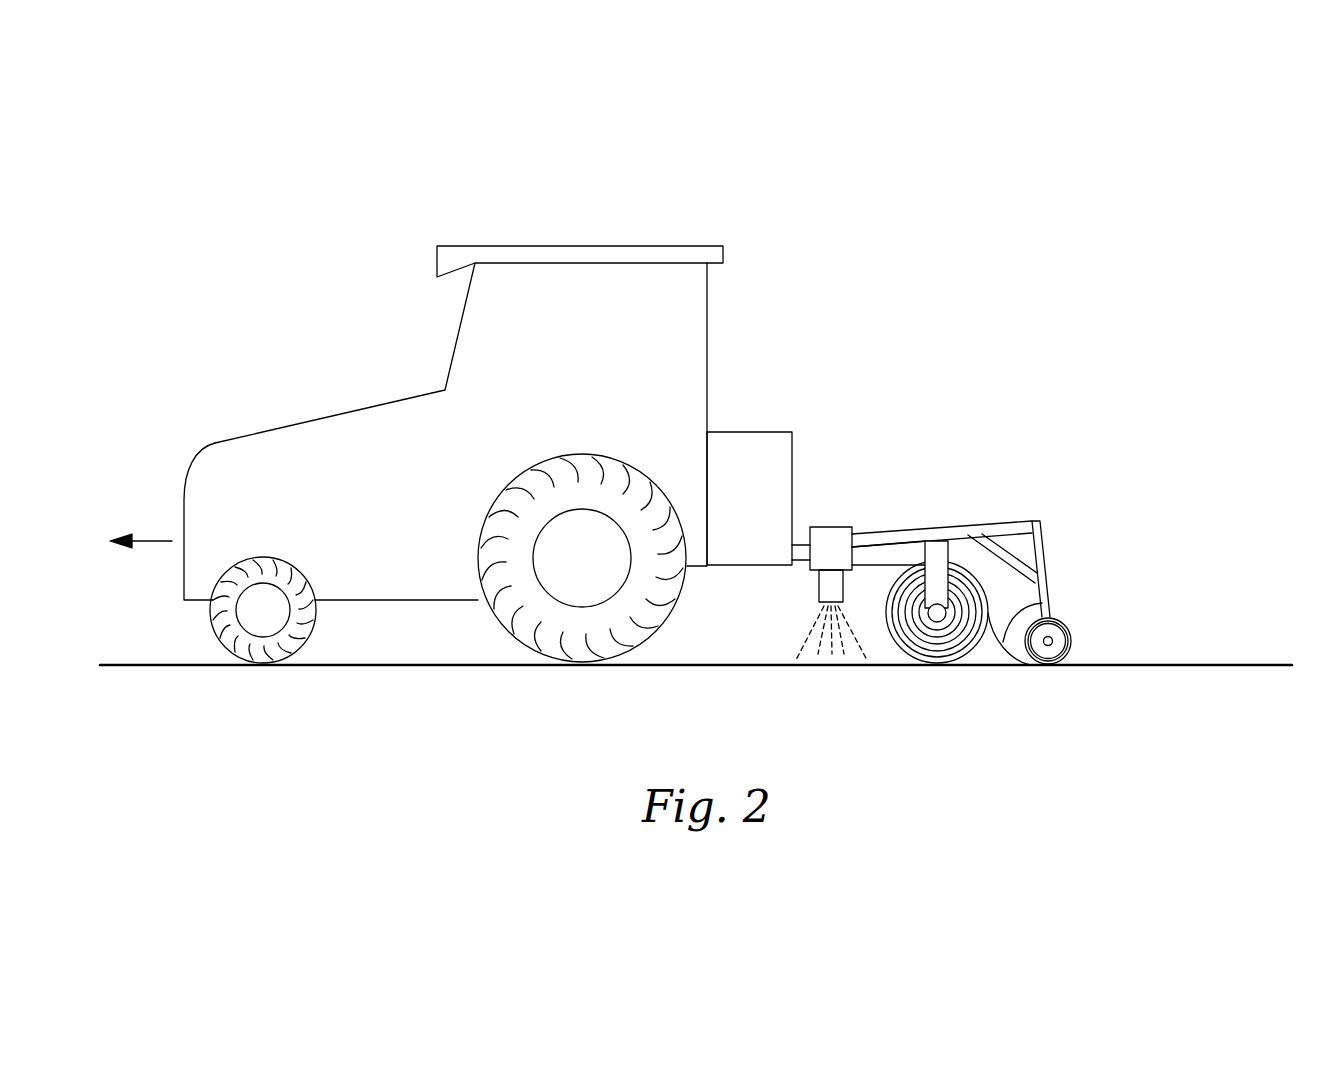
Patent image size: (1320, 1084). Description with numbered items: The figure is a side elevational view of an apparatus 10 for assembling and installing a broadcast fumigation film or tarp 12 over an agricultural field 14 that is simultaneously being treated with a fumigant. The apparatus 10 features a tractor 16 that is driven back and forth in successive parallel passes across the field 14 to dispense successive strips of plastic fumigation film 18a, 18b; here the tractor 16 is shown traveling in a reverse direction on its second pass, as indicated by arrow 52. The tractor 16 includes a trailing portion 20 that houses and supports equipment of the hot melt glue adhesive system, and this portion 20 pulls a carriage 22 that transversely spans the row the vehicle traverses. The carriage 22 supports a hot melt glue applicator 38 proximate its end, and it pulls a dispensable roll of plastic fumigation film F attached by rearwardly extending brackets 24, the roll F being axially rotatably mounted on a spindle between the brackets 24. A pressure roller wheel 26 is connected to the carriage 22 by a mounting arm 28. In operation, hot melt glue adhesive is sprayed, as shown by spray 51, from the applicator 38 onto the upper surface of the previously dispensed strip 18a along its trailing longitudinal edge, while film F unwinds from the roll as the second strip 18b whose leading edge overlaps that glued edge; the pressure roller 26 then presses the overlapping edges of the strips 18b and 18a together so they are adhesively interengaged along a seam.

The apparatus 10 is at (391, 303).
The broadcast fumigation film or tarp 12 is at (1157, 665).
The agricultural field 14 is at (1280, 708).
The tractor 16 is at (707, 350).
The initial film strip 18a is at (1222, 668).
The second juxtaposed film strip 18b is at (1042, 603).
The trailing portion 20 is at (792, 460).
The carriage 22 is at (829, 527).
The brackets 24 is at (917, 552).
The pressure roller wheels 26 is at (1071, 637).
The mounting arms 28 is at (1034, 521).
The hot melt glue applicators 38 is at (819, 585).
The spray 51 is at (832, 663).
The arrow 52 is at (145, 540).
The film roll F is at (961, 640).